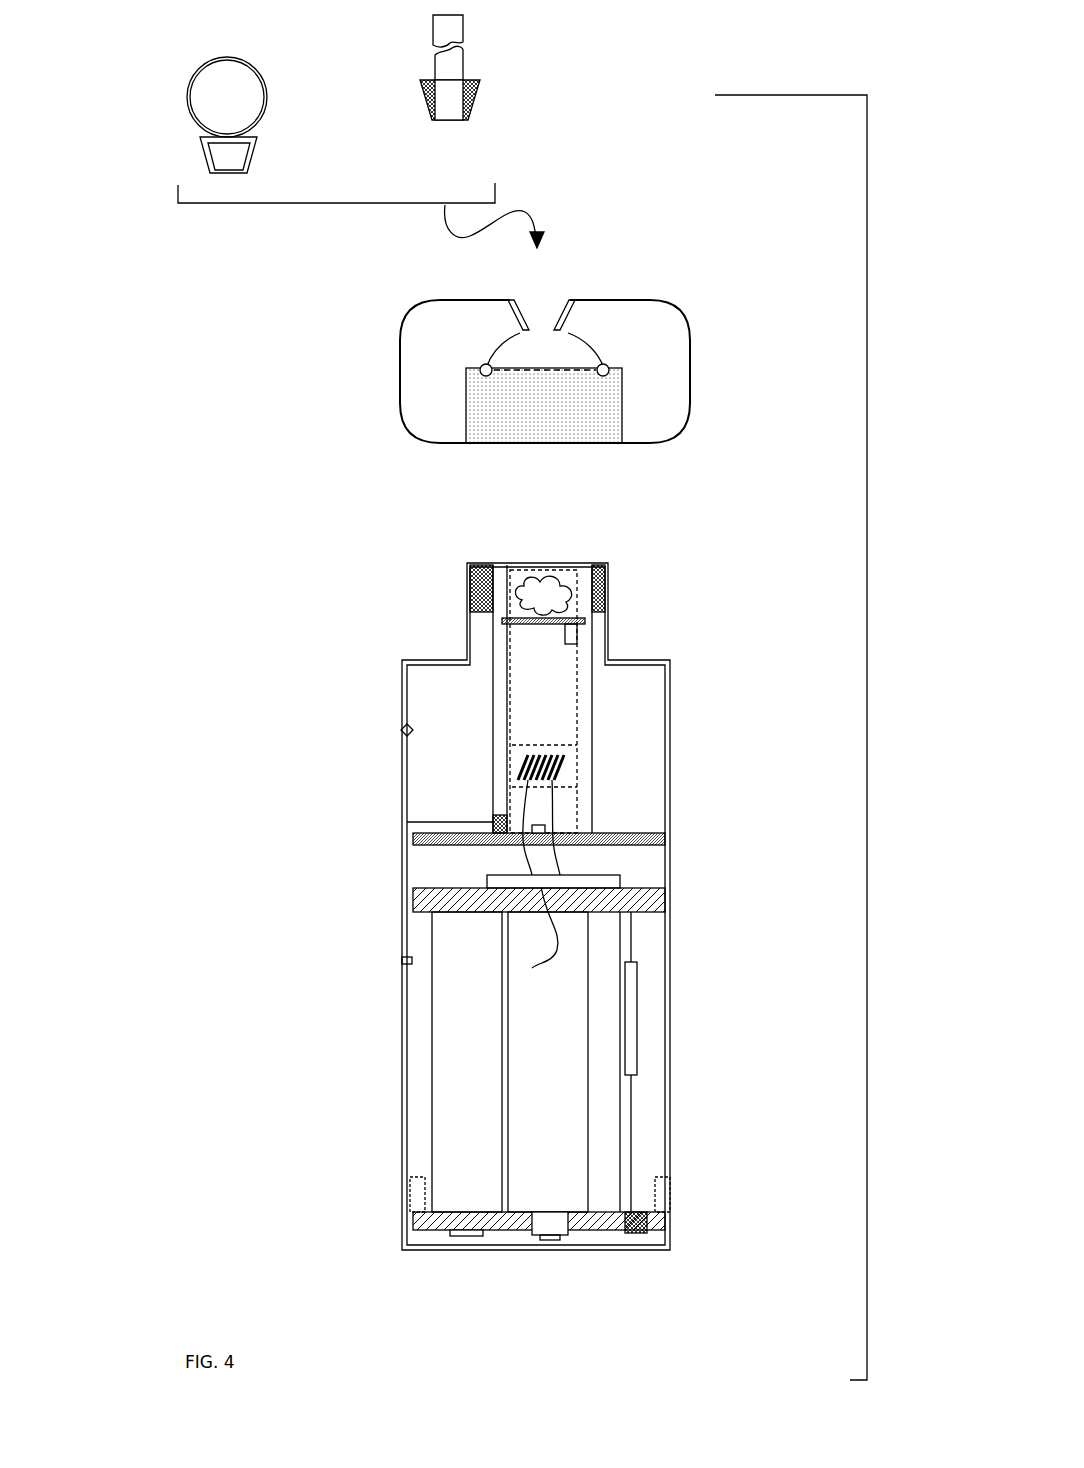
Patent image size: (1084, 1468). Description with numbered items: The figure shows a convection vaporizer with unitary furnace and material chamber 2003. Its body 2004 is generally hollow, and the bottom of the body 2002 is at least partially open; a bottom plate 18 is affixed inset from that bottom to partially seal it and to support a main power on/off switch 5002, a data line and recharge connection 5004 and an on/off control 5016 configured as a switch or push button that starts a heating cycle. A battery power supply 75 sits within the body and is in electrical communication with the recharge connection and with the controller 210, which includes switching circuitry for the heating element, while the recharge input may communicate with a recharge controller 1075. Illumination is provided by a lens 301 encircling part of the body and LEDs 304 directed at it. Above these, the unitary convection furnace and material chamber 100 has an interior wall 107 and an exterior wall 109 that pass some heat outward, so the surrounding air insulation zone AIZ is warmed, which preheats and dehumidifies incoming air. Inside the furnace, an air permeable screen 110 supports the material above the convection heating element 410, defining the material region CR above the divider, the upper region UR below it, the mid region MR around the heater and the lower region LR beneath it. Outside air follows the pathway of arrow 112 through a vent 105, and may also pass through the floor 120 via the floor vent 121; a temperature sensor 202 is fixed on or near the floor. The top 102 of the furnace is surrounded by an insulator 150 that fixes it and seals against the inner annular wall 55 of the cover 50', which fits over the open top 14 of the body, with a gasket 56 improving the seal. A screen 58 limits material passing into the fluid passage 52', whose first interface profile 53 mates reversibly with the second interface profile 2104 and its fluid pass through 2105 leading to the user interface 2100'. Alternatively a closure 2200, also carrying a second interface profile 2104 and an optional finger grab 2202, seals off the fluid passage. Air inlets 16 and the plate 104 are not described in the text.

The closure 2200 is at (170, 77).
The finger grab 2202 is at (244, 102).
The user interface 2100' is at (407, 67).
The second interface profile 2104 is at (207, 165).
The fluid pass through 2105 is at (445, 115).
The cover 50' is at (499, 371).
The first interface profile 53 is at (562, 305).
The fluid passage 52' is at (512, 341).
The inner annular wall 55 is at (612, 410).
The gasket 56 is at (486, 376).
The screen 58 is at (539, 370).
The material region CR is at (520, 564).
The top of the unitary convection furnace and material chamber 102 is at (537, 565).
The open top 14 is at (457, 568).
The insulator 150 is at (607, 572).
The air permeable screen 110 is at (513, 647).
The temperature sensor 202 is at (582, 633).
The unitary convection furnace and material chamber 100 is at (592, 708).
The interior wall 107 is at (507, 686).
The convection heating element 410 is at (552, 751).
The air insulation zone AIZ is at (640, 708).
The upper region UR is at (592, 720).
The air inlet 16 is at (402, 728).
The exterior wall 109 is at (594, 754).
The mid region MR is at (592, 772).
The pathway of incoming air 112 is at (407, 822).
The lower region LR is at (592, 812).
The base plate 104 is at (594, 833).
The floor 120 is at (663, 840).
The vent 105 is at (430, 833).
The floor vent 121 is at (622, 878).
The controller 210 is at (655, 886).
The battery power supply 75 is at (474, 1070).
The body 2004 is at (385, 1152).
The recharge controller (PCB) 1075 is at (638, 1032).
The lens 301 is at (412, 1195).
The LED 304 is at (435, 1193).
The bottom plate 18 is at (515, 1242).
The bottom of the body 2002 is at (665, 1240).
The main power on/off switch 5002 is at (470, 1243).
The on/off control 5016 is at (545, 1243).
The recharge connection 5004 is at (662, 1250).
The convection vaporizer with unitary furnace and material chamber 2003 is at (867, 428).